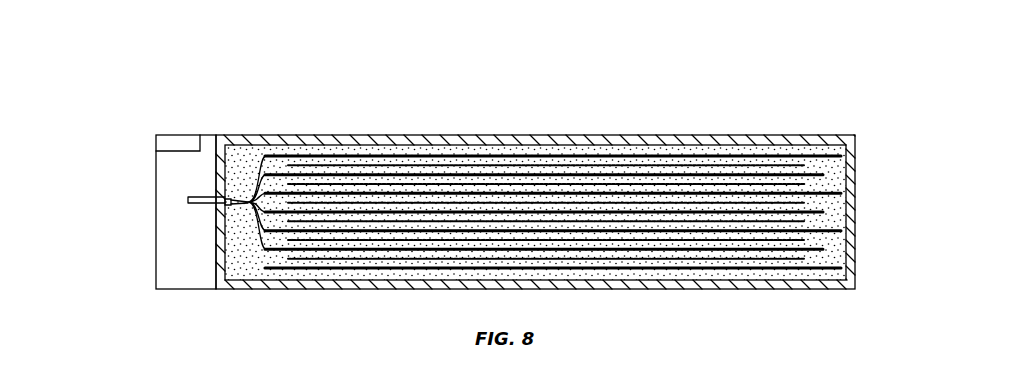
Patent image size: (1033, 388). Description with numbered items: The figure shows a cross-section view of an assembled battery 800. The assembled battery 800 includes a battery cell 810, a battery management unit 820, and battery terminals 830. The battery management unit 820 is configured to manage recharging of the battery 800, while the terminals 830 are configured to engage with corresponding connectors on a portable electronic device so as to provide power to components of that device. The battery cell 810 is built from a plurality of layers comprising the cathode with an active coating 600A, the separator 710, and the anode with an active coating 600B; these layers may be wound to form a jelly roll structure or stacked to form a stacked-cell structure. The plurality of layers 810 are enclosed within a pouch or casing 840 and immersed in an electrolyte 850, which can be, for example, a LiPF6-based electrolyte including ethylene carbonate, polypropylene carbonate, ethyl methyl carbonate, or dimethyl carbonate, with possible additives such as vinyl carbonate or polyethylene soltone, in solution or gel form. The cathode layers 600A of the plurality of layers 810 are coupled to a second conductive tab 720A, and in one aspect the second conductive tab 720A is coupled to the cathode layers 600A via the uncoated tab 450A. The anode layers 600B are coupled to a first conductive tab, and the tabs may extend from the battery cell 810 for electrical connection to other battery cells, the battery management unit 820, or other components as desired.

The assembled battery 800 is at (62, 46).
The battery cell 810 is at (612, 202).
The battery management unit 820 is at (148, 213).
The battery terminals 830 is at (167, 136).
The second conductive tab 720A is at (180, 192).
The uncoated tab 450A is at (242, 155).
The separator 710 is at (372, 145).
The electrolyte 850 is at (480, 138).
The pouch or casing 840 is at (560, 130).
The cathode with active coating 600A is at (833, 155).
The anode with active coating 600B is at (813, 253).